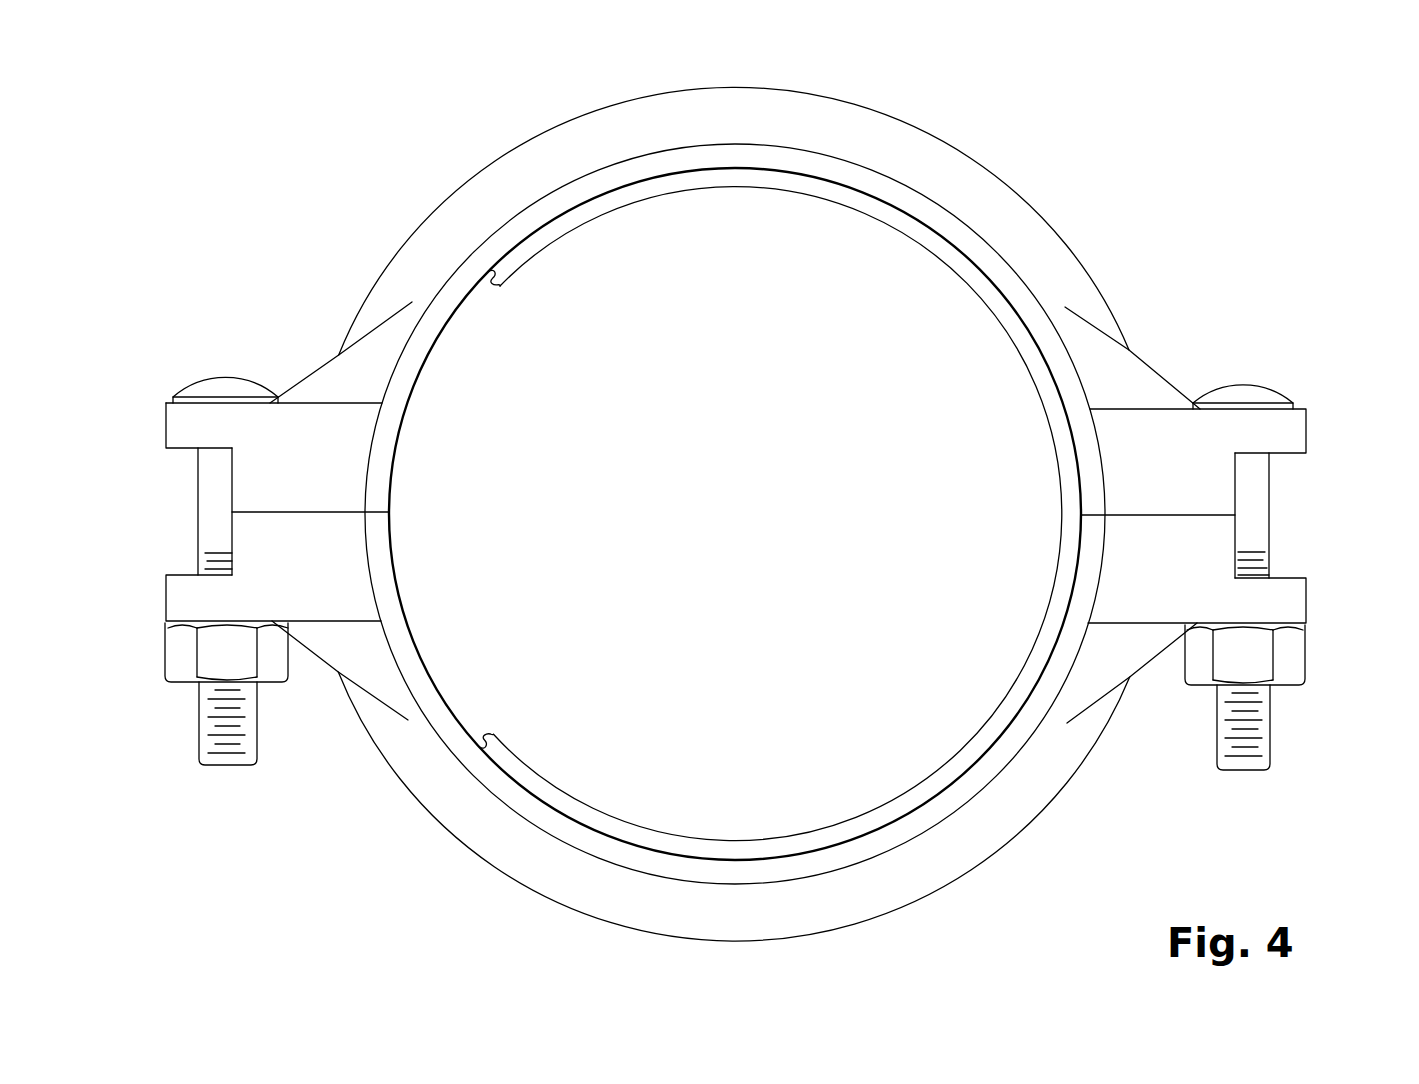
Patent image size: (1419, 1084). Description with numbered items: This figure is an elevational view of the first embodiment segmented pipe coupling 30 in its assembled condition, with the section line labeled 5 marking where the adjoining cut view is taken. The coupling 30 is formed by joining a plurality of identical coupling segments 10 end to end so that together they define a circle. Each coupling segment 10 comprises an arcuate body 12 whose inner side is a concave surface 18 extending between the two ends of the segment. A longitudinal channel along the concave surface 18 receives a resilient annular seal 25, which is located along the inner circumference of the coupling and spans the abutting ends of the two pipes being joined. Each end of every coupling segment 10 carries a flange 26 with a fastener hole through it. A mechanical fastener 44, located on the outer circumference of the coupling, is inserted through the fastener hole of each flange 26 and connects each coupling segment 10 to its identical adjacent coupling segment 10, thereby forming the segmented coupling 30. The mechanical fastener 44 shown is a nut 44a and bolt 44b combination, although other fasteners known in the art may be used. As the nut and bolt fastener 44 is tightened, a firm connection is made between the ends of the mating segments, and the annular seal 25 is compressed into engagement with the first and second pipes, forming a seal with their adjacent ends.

The section line 5- 5 is at (474, 953).
The coupling segment 10 is at (398, 250).
The arcuate body 12 is at (900, 213).
The concave surface 18 is at (672, 173).
The resilient annular seal 25 is at (570, 805).
The flange 26 is at (172, 402).
The segmented pipe coupling 30 is at (969, 897).
The mechanical fastener 44 is at (190, 513).
The nut 44a is at (1255, 540).
The bolt 44b is at (1285, 683).